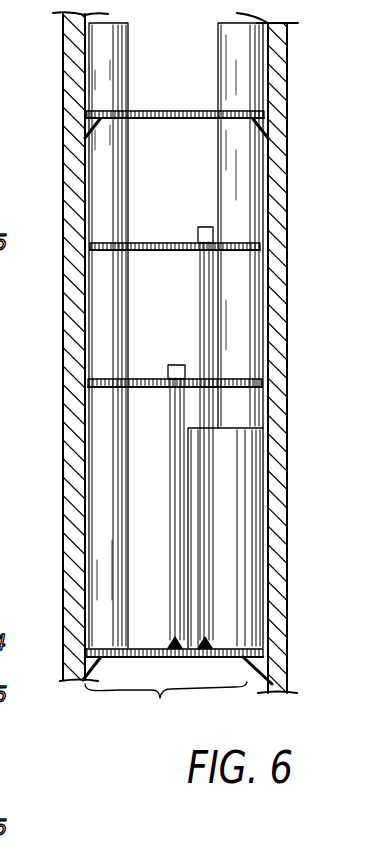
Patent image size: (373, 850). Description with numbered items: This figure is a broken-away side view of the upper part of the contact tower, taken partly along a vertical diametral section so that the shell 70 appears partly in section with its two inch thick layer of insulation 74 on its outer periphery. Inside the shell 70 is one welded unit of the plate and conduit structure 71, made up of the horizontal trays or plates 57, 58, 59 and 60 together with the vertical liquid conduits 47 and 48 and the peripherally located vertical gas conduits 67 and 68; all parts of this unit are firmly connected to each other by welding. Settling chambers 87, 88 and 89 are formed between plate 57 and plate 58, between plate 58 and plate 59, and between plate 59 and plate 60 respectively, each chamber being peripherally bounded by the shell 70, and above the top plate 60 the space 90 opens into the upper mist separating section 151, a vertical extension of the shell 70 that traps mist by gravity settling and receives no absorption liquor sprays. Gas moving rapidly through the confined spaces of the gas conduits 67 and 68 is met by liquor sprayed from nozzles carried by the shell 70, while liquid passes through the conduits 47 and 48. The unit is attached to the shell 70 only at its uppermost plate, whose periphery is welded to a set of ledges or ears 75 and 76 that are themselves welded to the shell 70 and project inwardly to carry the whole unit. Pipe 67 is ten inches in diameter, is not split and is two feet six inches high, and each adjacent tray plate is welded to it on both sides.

The upper mist separating section 151 is at (203, 26).
The upper compartment 90 is at (176, 109).
The settling chamber 89 is at (175, 214).
The settling chamber 88 is at (175, 370).
The settling chamber 87 is at (178, 562).
The insulation 74 is at (250, 72).
The ledge or ear 76 is at (90, 113).
The plate 60 is at (158, 119).
The plate 59 is at (178, 226).
The plate 58 is at (222, 388).
The plate 57 is at (150, 658).
The shell 70 is at (62, 209).
The gas conduit 68 is at (103, 218).
The gas conduit 67 is at (248, 492).
The vertical liquid conduit 48 is at (202, 287).
The vertical liquid conduit 47 is at (173, 526).
The ledge or ear 75 is at (90, 660).
The plate and conduit structure 71 is at (166, 707).